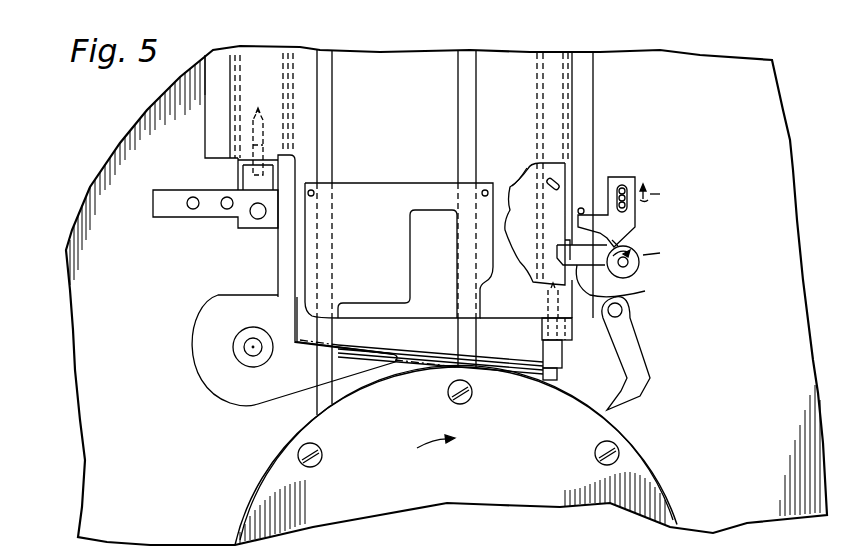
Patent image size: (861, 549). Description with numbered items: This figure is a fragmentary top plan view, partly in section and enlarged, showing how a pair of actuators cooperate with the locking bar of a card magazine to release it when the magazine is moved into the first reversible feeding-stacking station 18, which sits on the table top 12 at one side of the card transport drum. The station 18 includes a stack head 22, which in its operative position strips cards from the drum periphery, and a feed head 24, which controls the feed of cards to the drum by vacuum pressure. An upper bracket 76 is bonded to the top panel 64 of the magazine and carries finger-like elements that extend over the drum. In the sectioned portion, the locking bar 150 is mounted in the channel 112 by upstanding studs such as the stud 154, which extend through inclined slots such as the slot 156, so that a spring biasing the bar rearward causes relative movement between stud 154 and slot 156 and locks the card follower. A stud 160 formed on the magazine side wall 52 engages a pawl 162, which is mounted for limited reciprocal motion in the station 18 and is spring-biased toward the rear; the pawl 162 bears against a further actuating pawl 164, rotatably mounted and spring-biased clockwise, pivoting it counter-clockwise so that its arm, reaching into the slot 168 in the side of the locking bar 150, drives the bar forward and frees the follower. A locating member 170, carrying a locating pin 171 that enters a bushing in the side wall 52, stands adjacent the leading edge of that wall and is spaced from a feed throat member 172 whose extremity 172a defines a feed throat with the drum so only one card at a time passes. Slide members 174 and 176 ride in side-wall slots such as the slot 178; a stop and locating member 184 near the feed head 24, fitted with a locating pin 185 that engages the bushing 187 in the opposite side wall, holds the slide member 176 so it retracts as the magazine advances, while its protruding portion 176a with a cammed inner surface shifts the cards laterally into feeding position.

The table top 12 is at (138, 152).
The first reversible feeding-stacking station 18 is at (502, 81).
The stack head 22 is at (630, 347).
The feed head 24 is at (228, 397).
The side wall 52 is at (632, 321).
The top panel 64 is at (427, 167).
The upper bracket 76 is at (476, 232).
The channel 112 is at (566, 330).
The locking bar 150 is at (552, 198).
The stud 154 is at (560, 182).
The slot 156 is at (513, 173).
The stud 160 is at (582, 209).
The pawl 162 is at (625, 223).
The further actuating pawl 164 is at (638, 268).
The slot 168 is at (616, 241).
The locating member 170 is at (574, 342).
The locating pin 171 is at (552, 305).
The feed throat member 172 is at (548, 352).
The extremity 172a is at (557, 378).
The slide member 174 is at (555, 117).
The slide member 176 is at (272, 127).
The protruding portion 176a is at (283, 258).
The slot 178 is at (550, 289).
The stop and locating member 184 is at (258, 187).
The locating pin 185 is at (258, 145).
The bushing 187 is at (262, 113).